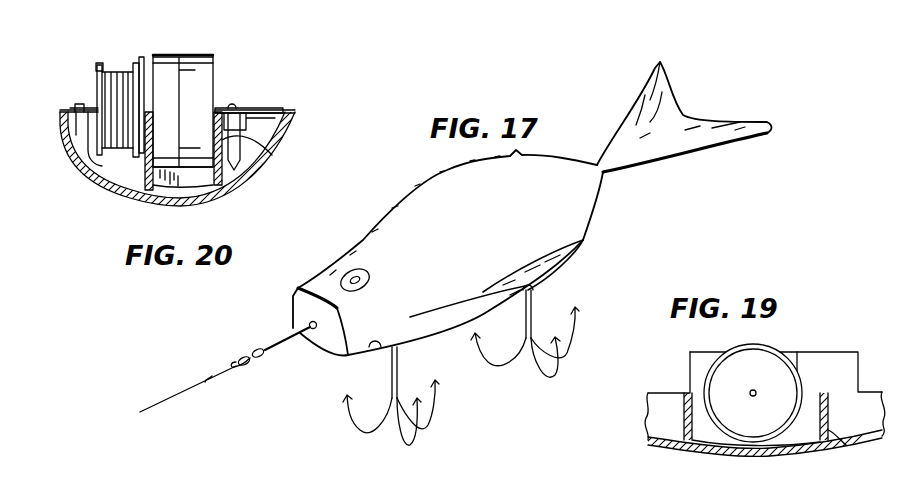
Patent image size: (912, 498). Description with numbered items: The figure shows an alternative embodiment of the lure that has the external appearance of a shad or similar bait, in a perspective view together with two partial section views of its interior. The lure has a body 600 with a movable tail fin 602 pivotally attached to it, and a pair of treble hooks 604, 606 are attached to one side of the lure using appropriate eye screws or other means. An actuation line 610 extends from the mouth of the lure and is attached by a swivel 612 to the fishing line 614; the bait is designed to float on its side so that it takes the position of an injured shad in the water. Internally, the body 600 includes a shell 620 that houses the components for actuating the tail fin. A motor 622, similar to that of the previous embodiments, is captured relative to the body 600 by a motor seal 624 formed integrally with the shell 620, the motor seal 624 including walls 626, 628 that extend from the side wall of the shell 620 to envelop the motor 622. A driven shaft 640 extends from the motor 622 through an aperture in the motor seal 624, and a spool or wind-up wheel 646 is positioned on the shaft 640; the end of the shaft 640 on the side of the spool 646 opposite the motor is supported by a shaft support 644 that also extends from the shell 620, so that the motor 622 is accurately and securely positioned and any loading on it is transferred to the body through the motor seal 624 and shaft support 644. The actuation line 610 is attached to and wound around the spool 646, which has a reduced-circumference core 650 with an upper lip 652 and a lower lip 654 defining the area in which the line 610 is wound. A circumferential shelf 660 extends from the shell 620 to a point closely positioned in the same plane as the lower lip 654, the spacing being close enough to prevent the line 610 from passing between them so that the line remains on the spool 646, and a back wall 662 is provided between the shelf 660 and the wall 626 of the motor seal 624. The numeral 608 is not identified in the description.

In FIG. 17, the body 600 is at (594, 200).
In FIG. 17, the movable tail fin 602 is at (762, 110).
In FIG. 17, the treble hook 604 is at (402, 372).
In FIG. 17, the treble hook 606 is at (542, 290).
In FIG. 17, the lure element 608 is at (347, 496).
In FIG. 17, the actuation line 610 is at (312, 335).
In FIG. 17, the swivel 612 is at (258, 349).
In FIG. 17, the fishing line 614 is at (160, 405).
In FIG. 20, the shell 620 is at (236, 196).
In FIG. 20, the motor 622 is at (214, 66).
In FIG. 20, the motor seal 624 is at (254, 172).
In FIG. 20, the wall 626 is at (140, 182).
In FIG. 20, the wall 628 is at (268, 142).
In FIG. 20, the shaft 640 is at (258, 108).
In FIG. 20, the shaft support 644 is at (76, 128).
In FIG. 20, the spool 646 is at (95, 73).
In FIG. 19, the spool 646 is at (780, 378).
In FIG. 20, the core 650 is at (132, 64).
In FIG. 20, the upper lip 652 is at (143, 58).
In FIG. 20, the lower lip 654 is at (98, 64).
In FIG. 19, the circumferential shelf 660 is at (790, 443).
In FIG. 19, the back wall 662 is at (832, 434).